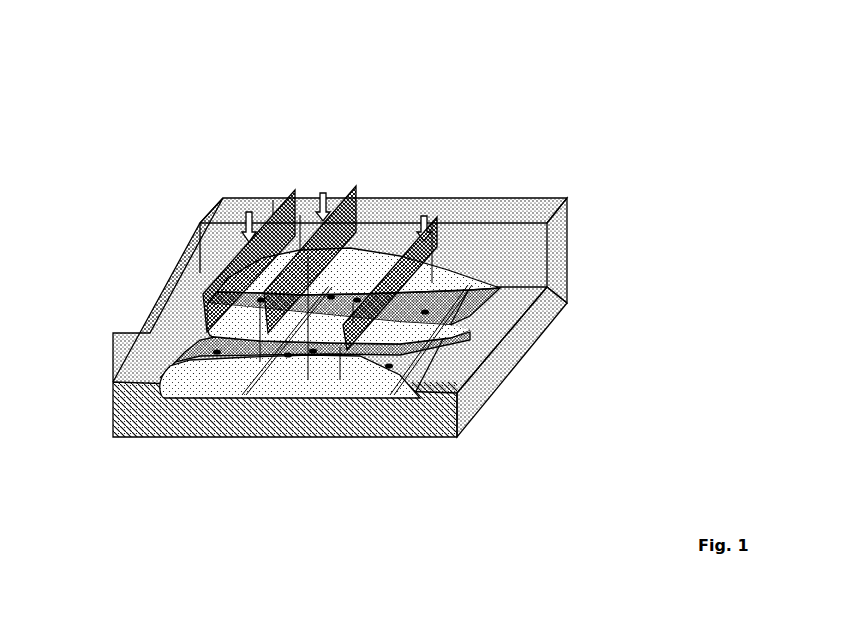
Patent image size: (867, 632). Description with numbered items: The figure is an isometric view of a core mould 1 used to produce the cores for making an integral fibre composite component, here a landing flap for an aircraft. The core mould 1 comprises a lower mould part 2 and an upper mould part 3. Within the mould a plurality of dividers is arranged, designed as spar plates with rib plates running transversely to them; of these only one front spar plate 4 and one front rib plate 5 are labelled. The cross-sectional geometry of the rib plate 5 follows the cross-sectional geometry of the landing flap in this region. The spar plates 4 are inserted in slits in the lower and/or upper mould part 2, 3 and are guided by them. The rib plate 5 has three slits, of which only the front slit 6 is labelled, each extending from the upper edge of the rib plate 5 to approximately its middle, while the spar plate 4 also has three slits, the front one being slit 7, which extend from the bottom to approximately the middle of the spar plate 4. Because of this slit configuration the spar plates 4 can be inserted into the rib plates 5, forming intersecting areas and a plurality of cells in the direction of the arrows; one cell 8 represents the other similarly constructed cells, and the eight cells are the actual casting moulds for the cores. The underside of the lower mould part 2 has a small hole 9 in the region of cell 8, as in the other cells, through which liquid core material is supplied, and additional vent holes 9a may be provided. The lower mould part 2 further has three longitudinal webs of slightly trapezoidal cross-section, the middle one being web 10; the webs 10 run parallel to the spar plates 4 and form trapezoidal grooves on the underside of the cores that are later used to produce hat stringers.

The core mould 1 is at (297, 264).
The lower mould part 2 is at (428, 420).
The upper mould part 3 is at (200, 237).
The front spar plate 4 is at (272, 210).
The front rib plate 5 is at (182, 386).
The front slit of rib plate 6 is at (198, 345).
The front slit of spar plate 7 is at (207, 333).
The cell 8 is at (366, 257).
The hole 9 is at (428, 215).
The vent holes 9a is at (310, 210).
The longitudinal web 10 is at (348, 330).